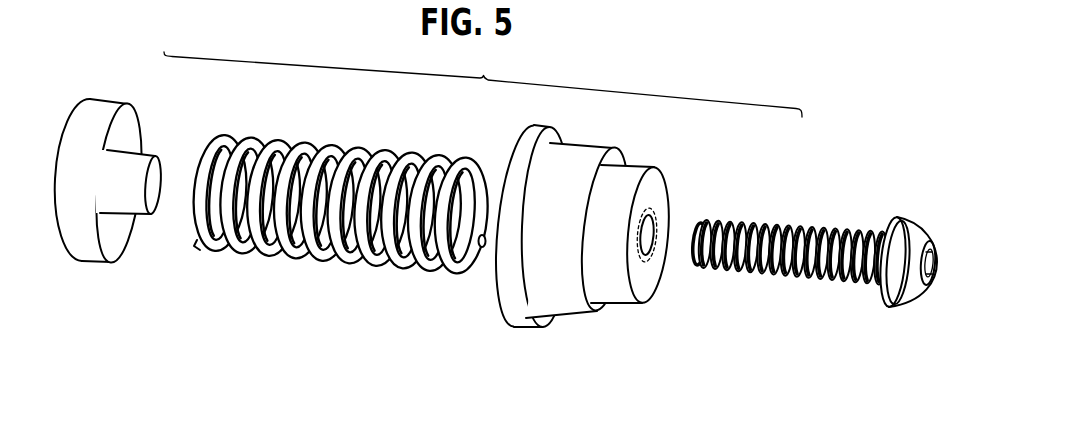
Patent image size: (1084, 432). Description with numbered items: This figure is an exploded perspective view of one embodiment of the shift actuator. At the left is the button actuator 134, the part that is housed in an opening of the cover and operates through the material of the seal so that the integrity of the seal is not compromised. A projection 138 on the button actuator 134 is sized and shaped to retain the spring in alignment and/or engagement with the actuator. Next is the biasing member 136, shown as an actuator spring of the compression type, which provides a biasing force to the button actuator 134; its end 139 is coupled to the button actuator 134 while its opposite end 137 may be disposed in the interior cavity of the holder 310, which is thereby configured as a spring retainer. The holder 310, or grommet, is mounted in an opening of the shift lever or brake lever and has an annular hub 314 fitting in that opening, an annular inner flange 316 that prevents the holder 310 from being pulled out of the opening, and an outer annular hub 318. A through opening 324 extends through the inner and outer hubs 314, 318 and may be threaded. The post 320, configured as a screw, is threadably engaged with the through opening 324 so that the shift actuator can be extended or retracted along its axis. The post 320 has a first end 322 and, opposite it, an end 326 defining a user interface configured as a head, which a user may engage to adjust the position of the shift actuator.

The button actuator 134 is at (114, 206).
The projection 138 is at (138, 215).
The end of the spring 139 is at (199, 252).
The biasing member 136 is at (338, 235).
The end of the spring 137 is at (470, 272).
The holder 310 is at (605, 239).
The annular hub 314 is at (568, 311).
The annular inner flange 316 is at (520, 331).
The outer annular hub 318 is at (657, 208).
The through opening 324 is at (652, 218).
The post 320 is at (817, 242).
The first end 322 is at (689, 236).
The end 326 is at (916, 227).